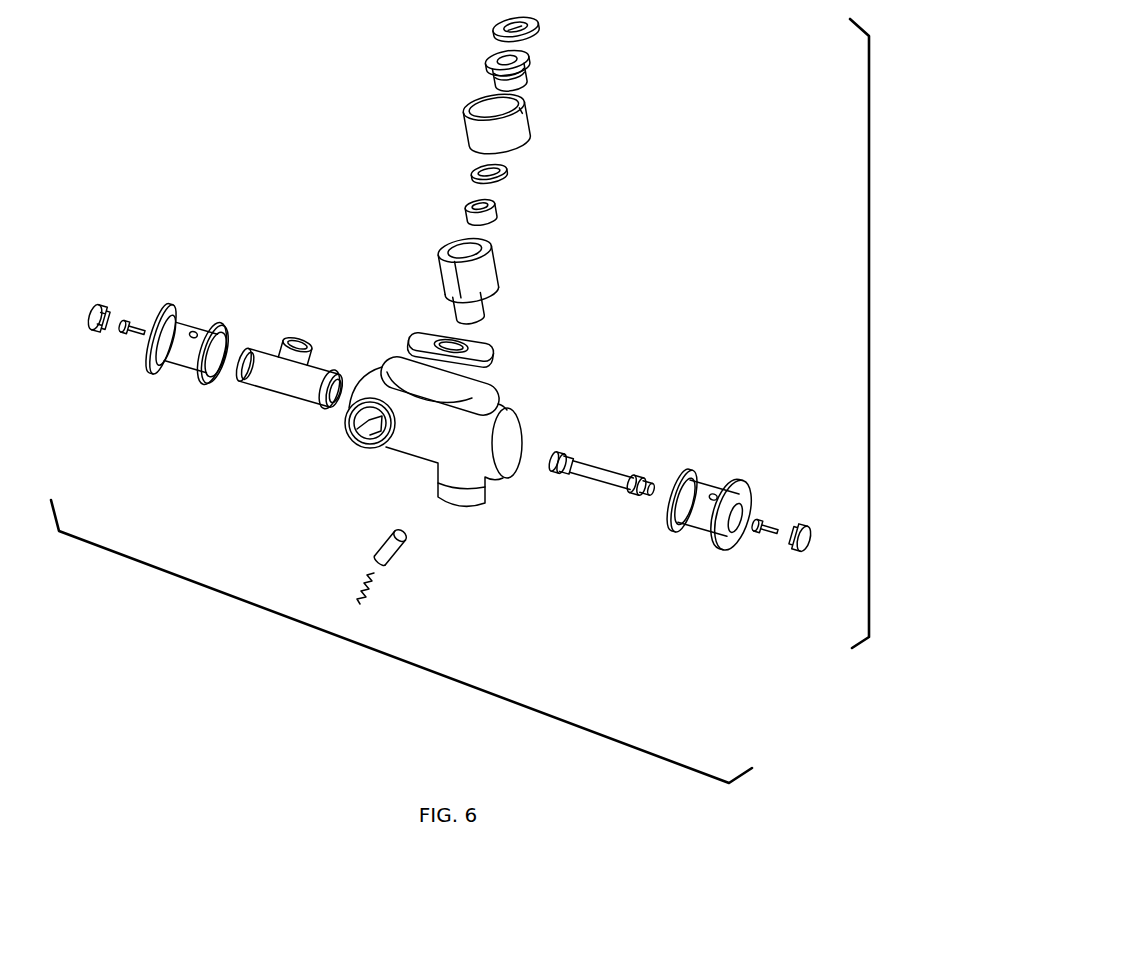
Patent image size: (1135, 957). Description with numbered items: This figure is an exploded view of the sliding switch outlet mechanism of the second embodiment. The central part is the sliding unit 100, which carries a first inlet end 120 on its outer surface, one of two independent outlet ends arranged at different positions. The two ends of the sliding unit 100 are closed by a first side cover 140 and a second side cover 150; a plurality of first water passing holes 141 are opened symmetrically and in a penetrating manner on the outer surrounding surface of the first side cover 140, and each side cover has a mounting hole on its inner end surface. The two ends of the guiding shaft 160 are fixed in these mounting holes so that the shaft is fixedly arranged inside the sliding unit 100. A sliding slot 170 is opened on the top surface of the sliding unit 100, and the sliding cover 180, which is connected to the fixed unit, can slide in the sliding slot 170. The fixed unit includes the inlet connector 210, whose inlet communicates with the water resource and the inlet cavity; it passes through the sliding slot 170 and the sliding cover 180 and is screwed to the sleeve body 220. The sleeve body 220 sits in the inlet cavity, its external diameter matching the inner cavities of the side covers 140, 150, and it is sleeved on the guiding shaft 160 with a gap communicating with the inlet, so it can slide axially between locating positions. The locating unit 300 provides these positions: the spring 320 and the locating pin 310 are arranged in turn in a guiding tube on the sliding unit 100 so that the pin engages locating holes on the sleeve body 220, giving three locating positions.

The sliding unit 100 is at (370, 395).
The first inlet end 120 is at (357, 432).
The first side cover 140 is at (160, 321).
The first water passing holes 141 is at (185, 317).
The second side cover 150 is at (743, 483).
The guiding shaft 160 is at (628, 482).
The sliding slot 170 is at (402, 372).
The sliding cover 180 is at (498, 363).
The inlet connector 210 is at (550, 92).
The sleeve body 220 is at (262, 368).
The locating unit 300 is at (462, 585).
The locating pin 310 is at (390, 549).
The spring 320 is at (353, 603).